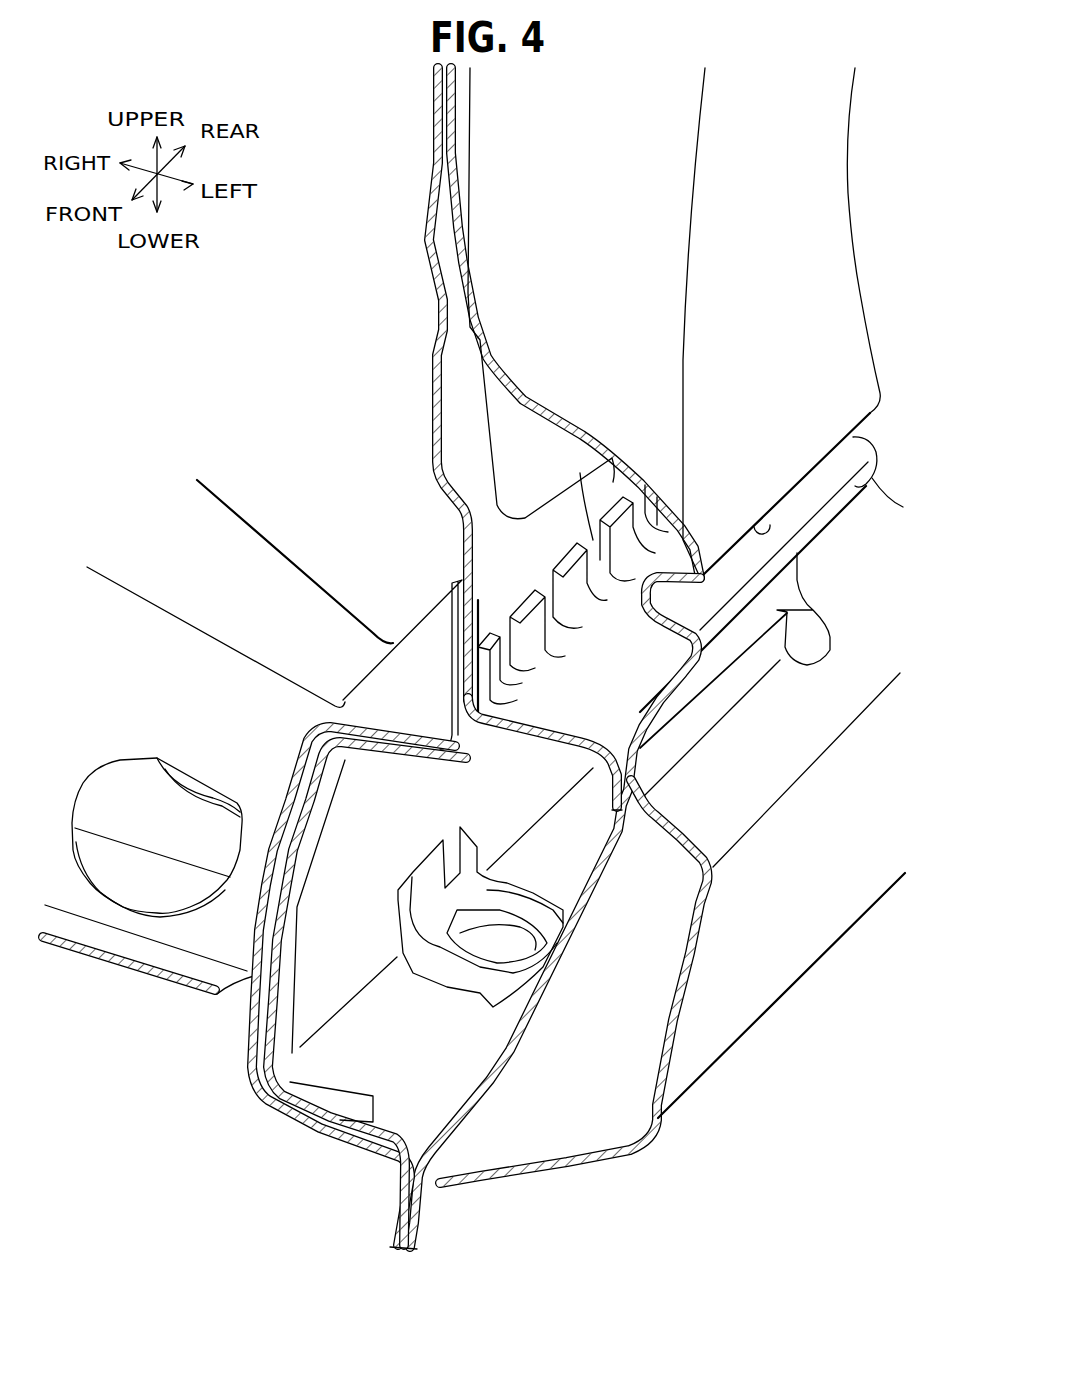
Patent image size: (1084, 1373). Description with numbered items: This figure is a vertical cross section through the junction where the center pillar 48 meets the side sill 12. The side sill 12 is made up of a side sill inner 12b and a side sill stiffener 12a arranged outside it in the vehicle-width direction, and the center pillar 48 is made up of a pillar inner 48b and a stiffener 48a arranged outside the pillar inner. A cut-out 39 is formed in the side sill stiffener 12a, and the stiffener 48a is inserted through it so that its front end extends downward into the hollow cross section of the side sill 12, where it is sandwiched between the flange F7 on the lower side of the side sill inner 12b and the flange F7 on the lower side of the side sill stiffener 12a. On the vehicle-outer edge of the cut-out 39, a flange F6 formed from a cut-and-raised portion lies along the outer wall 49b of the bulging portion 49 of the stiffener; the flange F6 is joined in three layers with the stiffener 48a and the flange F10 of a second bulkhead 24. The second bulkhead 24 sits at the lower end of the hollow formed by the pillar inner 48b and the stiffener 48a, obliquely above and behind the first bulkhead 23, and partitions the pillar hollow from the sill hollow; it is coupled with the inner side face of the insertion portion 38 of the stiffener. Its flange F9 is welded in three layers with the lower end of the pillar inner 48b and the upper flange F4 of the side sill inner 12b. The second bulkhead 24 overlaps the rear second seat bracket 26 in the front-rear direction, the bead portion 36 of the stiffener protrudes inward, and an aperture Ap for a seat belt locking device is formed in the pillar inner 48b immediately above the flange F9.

The center pillar 48 is at (495, 384).
The stiffener 48a is at (580, 137).
The pillar inner 48b is at (430, 387).
The bulging portion 49 is at (666, 390).
The outer wall 49b is at (782, 270).
The aperture Ap is at (493, 427).
The flange F9 is at (593, 557).
The bead portion 36 is at (757, 530).
The cut-out 39 is at (803, 647).
The flange F6 is at (727, 693).
The second seat bracket 26 is at (237, 563).
The flange F4 is at (452, 617).
The flange F10 is at (613, 787).
The second bulkhead 24 is at (560, 702).
The side sill 12 is at (520, 912).
The side sill stiffener 12a is at (713, 1027).
The side sill inner 12b is at (317, 953).
The first bulkhead 23 is at (297, 1083).
The insertion portion 38 is at (560, 1017).
The flange F7 is at (393, 1233).